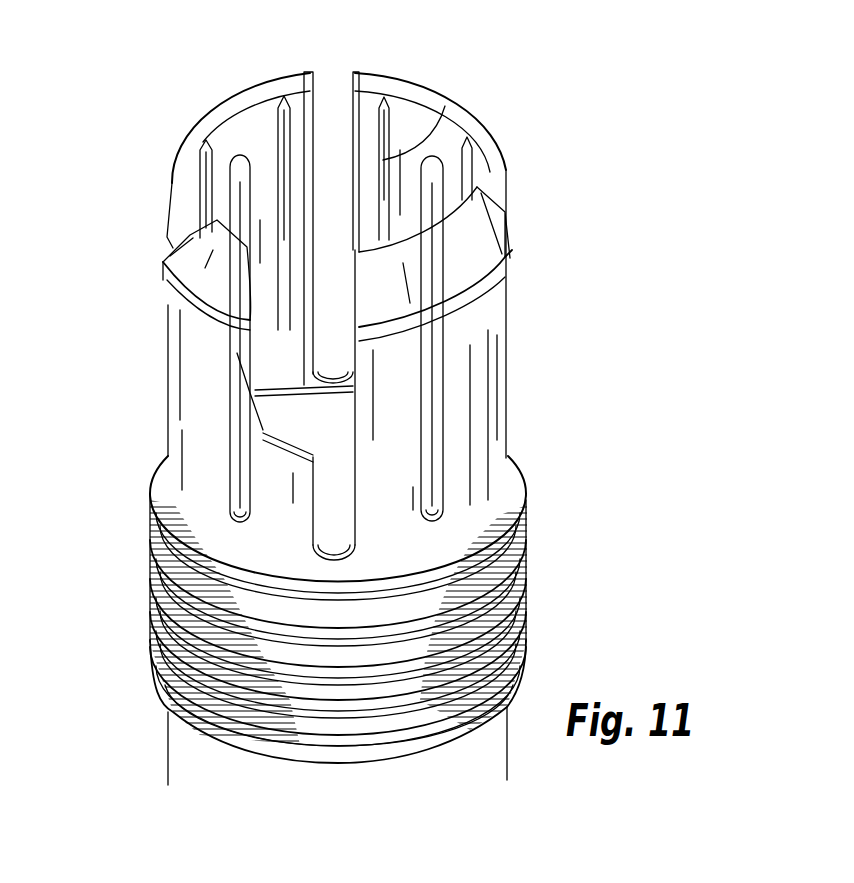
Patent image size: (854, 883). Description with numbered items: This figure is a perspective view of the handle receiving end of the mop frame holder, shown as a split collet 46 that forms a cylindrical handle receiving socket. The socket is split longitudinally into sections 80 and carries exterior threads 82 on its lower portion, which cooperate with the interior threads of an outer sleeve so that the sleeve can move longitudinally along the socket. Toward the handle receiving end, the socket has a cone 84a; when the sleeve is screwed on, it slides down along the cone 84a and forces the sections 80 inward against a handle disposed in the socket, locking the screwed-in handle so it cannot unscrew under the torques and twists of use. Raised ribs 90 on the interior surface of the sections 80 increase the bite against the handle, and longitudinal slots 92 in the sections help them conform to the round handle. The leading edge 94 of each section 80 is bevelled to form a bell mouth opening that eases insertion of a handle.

The cap assembly 46 is at (660, 470).
The sections 80 is at (173, 248).
The exterior threads 82 is at (517, 668).
The cone 84a is at (173, 177).
The raised ribs 90 is at (353, 92).
The longitudinal slots 92 is at (235, 204).
The leading edge 94 is at (195, 140).